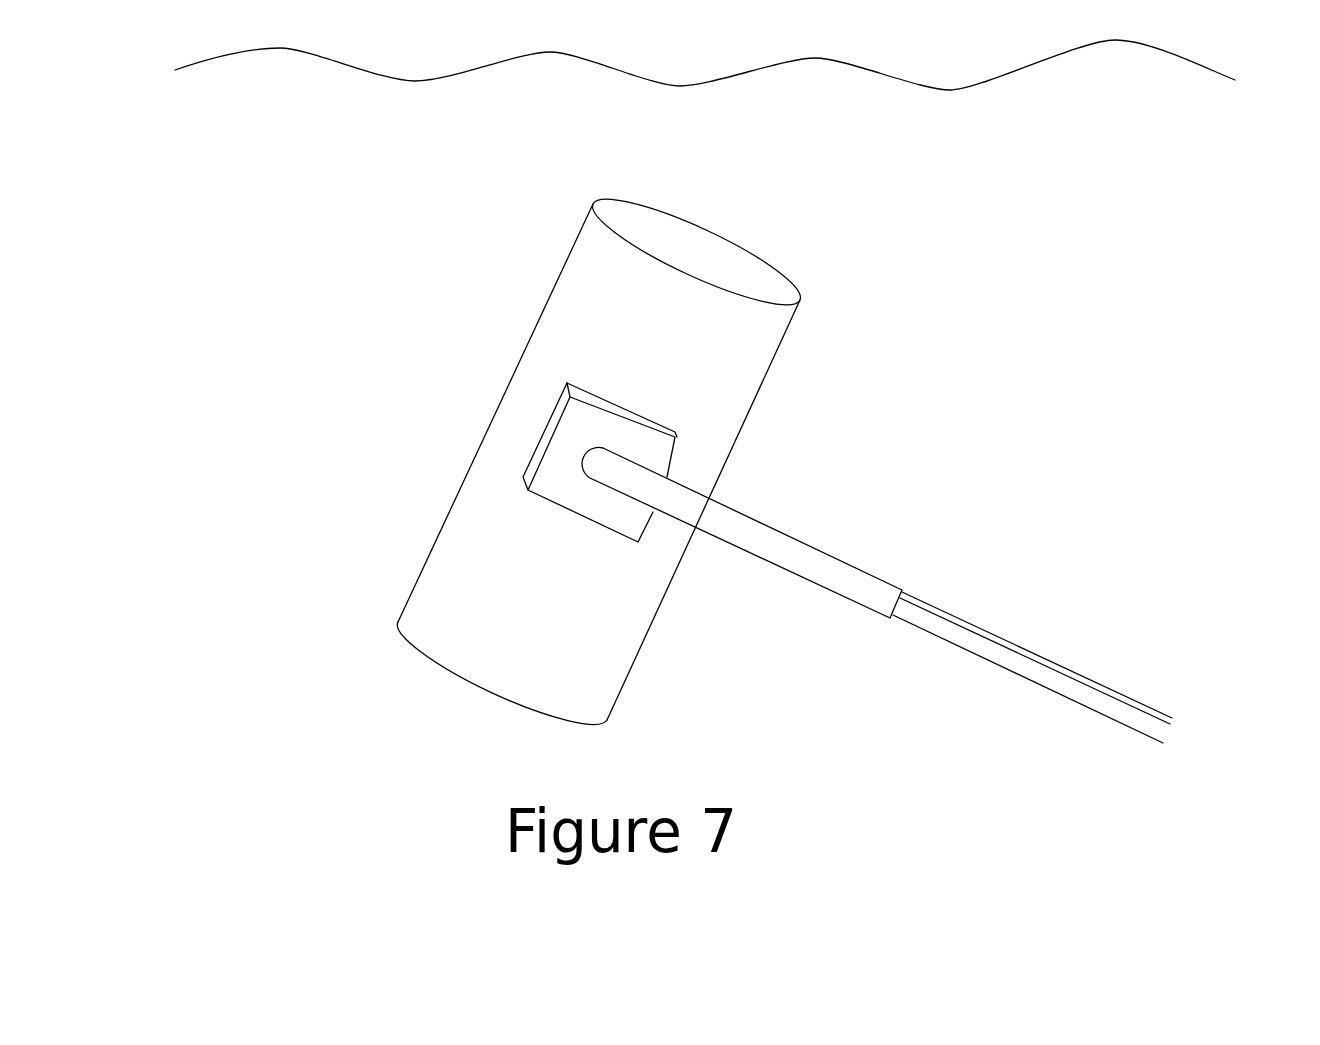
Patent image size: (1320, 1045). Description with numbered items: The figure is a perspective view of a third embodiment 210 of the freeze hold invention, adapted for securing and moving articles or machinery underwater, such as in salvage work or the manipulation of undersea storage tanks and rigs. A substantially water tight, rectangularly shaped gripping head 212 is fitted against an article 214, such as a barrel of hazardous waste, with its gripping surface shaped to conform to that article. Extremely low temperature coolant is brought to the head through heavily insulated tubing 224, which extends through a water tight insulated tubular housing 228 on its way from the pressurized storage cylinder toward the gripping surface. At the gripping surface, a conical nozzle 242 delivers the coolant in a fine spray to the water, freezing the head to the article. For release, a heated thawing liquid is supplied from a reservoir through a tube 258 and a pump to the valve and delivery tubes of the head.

The third embodiment 210 is at (926, 599).
The gripping head 212 is at (660, 452).
The article 214 is at (750, 350).
The heavily insulated tubing 224 is at (1107, 685).
The water tight insulated tubular housing 228 is at (872, 574).
The nozzle 242 is at (997, 82).
The tube 258 is at (967, 653).